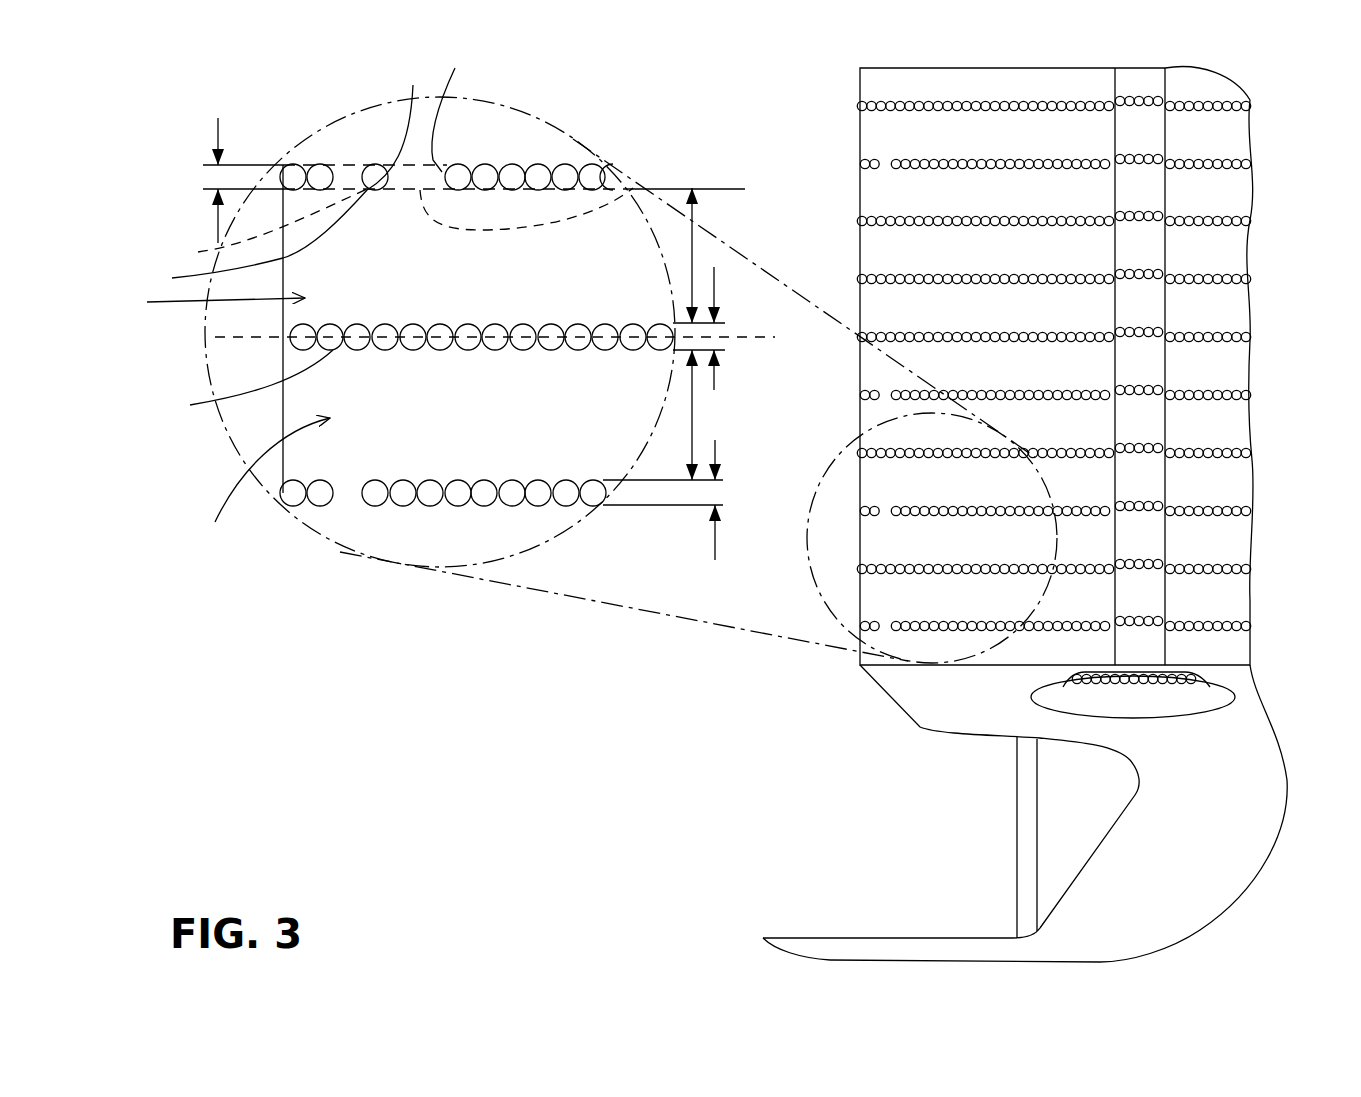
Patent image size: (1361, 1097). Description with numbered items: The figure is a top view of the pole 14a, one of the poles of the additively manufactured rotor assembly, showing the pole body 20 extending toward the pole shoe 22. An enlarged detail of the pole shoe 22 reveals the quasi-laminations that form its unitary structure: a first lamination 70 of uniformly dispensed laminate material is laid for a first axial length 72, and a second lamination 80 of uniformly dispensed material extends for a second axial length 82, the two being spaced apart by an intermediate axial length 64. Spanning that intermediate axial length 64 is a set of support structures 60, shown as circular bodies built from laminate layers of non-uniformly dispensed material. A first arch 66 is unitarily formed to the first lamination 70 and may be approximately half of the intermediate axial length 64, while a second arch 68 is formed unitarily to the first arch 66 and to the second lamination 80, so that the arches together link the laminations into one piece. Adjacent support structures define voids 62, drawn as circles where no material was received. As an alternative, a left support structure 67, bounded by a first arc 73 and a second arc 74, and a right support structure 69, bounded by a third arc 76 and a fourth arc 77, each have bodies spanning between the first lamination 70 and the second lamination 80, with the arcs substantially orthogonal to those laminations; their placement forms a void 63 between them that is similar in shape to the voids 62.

The pole 14a is at (1268, 305).
The pole body 20 is at (1140, 836).
The pole shoe 22 is at (932, 700).
The set of support structures 60 is at (313, 508).
The voids 62 is at (592, 175).
The void 63 is at (214, 281).
The intermediate axial length 64 is at (217, 133).
The first arch 66 is at (330, 324).
The left support structure 67 is at (402, 224).
The second arch 68 is at (249, 383).
The right support structure 69 is at (640, 190).
The first lamination 70 is at (212, 305).
The first axial length 72 is at (693, 252).
The first arc 73 is at (333, 178).
The second arc 74 is at (372, 180).
The third arc 76 is at (352, 159).
The fourth arc 77 is at (449, 109).
The second lamination 80 is at (261, 482).
The second axial length 82 is at (693, 418).